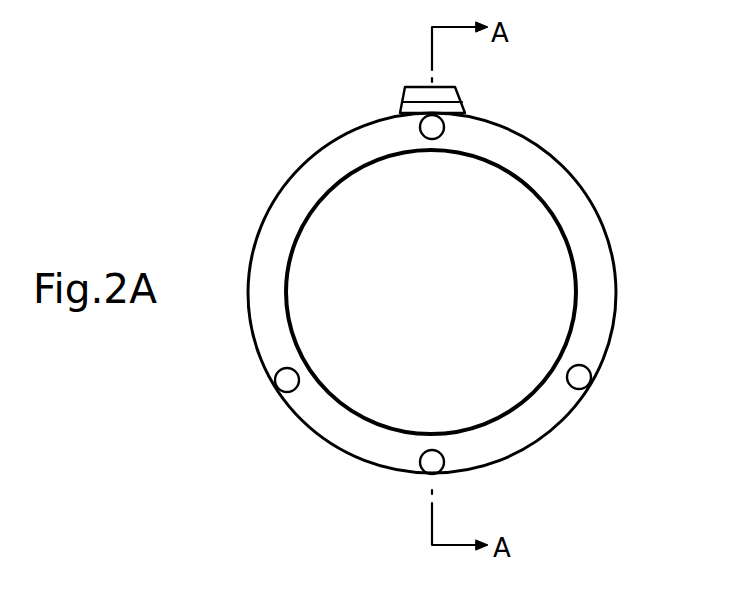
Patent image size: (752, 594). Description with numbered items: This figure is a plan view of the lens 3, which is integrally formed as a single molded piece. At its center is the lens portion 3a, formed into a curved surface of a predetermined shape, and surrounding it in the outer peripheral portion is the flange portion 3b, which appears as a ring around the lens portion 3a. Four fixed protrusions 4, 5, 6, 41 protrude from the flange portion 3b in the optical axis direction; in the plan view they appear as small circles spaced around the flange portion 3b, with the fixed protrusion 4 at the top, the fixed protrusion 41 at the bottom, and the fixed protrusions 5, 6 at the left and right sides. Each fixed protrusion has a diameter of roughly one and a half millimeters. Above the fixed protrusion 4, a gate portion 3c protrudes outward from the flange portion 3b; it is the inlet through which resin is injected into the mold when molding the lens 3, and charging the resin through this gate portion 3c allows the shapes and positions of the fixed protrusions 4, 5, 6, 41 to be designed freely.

The lens 3 is at (474, 270).
The lens portion 3a is at (558, 263).
The flange portion 3b is at (541, 152).
The gate portion 3c is at (446, 92).
The fixed protrusion 4 is at (466, 68).
The fixed protrusion 41 is at (440, 463).
The fixed protrusion 5 is at (286, 382).
The fixed protrusion 6 is at (583, 377).